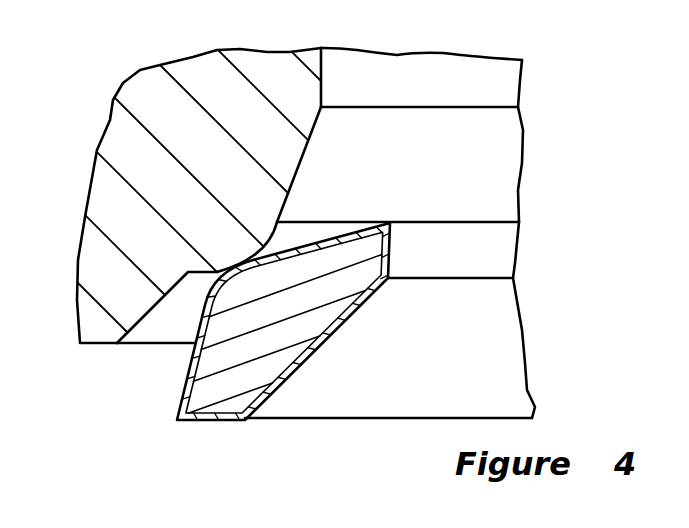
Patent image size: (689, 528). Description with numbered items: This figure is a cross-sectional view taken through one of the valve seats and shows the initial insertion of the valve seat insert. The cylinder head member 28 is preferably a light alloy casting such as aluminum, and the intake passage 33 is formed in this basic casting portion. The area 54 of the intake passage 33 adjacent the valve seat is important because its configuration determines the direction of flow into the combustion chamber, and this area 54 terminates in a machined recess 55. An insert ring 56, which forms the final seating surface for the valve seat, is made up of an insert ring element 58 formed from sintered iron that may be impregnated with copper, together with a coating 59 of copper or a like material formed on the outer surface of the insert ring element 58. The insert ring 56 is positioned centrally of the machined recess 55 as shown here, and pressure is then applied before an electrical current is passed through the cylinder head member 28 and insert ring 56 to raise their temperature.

The cylinder head member 28 is at (140, 168).
The intake passage 33 is at (334, 65).
The area of the intake passage 54 is at (322, 95).
The machined recess 55 is at (162, 318).
The insert ring 56 is at (265, 371).
The insert ring element 58 is at (273, 340).
The coating 59 is at (178, 401).